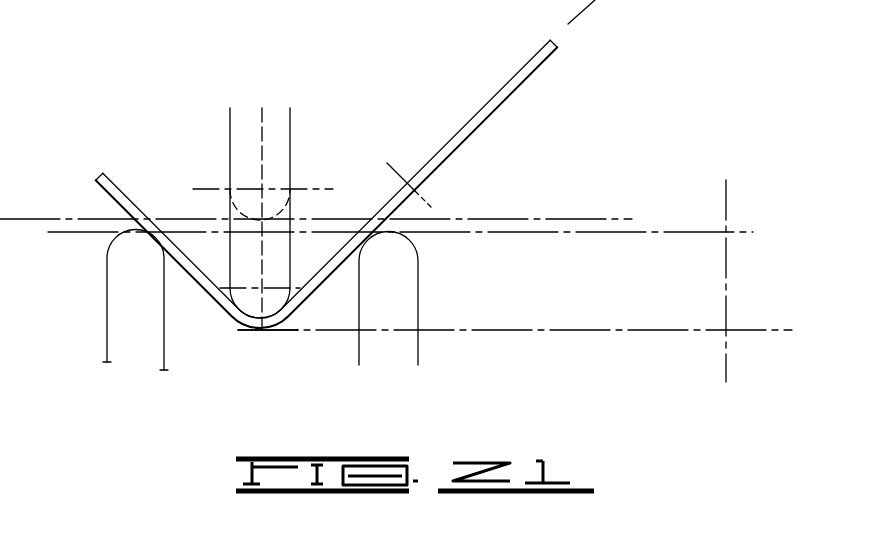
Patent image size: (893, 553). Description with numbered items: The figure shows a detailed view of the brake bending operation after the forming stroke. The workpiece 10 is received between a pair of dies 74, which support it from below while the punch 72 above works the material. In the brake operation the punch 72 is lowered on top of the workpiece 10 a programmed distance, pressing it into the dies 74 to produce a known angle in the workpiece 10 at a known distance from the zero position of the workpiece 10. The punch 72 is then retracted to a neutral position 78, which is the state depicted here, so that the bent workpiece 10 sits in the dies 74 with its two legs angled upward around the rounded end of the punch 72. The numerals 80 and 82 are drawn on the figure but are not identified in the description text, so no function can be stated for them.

The workpiece 10 is at (445, 157).
The punch 72 is at (282, 168).
The dies 74 is at (120, 279).
The neutral position 78 is at (115, 185).
The strip leg 80 is at (497, 100).
The bend 82 is at (262, 328).